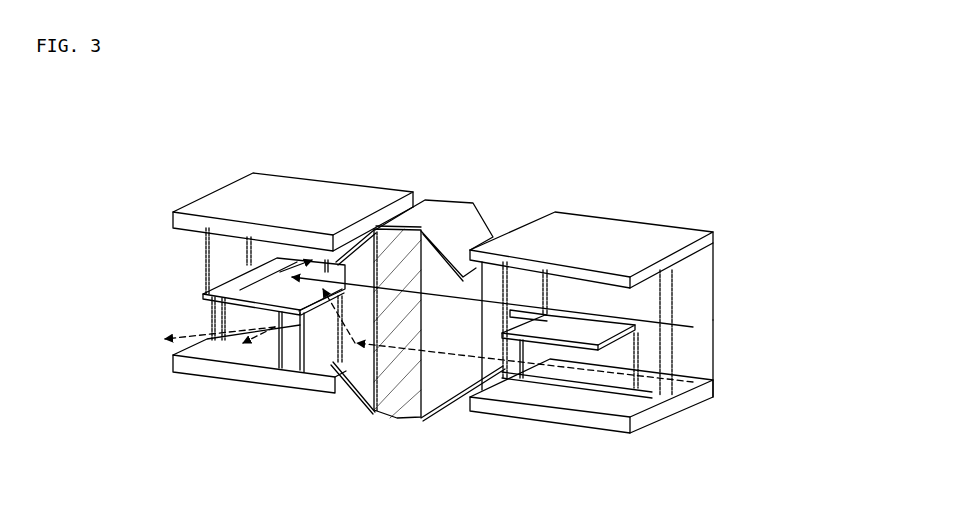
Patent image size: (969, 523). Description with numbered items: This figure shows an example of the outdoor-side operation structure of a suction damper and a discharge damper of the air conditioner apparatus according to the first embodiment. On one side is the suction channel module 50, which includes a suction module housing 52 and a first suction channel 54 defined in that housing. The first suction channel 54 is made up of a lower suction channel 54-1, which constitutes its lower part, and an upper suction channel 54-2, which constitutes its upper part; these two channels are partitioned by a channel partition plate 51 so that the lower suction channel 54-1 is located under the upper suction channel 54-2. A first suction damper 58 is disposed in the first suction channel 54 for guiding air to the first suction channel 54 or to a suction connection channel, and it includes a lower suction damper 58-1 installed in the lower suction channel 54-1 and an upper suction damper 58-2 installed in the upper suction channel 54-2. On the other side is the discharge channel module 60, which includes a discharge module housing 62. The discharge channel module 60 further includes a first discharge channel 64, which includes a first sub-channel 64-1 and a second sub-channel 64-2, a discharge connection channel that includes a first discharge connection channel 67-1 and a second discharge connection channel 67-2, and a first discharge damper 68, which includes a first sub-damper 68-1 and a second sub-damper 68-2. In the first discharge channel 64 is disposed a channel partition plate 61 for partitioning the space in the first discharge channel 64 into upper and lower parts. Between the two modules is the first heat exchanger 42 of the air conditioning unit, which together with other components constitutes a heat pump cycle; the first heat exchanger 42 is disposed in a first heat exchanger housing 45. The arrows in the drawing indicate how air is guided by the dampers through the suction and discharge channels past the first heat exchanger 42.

The first heat exchanger 42 is at (405, 242).
The first heat exchanger housing 45 is at (443, 205).
The suction channel module 50 is at (637, 213).
The channel partition plate 51 is at (600, 433).
The suction module housing 52 is at (582, 225).
The first suction channel 54 is at (580, 478).
The 1-1 suction channel 54-1 is at (595, 333).
The 1-2 suction channel 54-2 is at (574, 303).
The first suction damper 58 is at (775, 298).
The 1-1 suction damper 58-1 is at (623, 360).
The 1-2 suction damper 58-2 is at (641, 304).
The discharge channel module 60 is at (265, 165).
The channel partition plate 61 is at (237, 290).
The discharge module housing 62 is at (343, 203).
The first discharge channel 64 is at (272, 447).
The 1-1 discharge channel 64-1 is at (272, 340).
The 1-2 discharge channel 64-2 is at (272, 270).
The first discharge connection channel 67-1 is at (305, 372).
The second discharge connection channel 67-2 is at (318, 266).
The first discharge damper 68 is at (173, 118).
The 1-1 discharge damper 68-1 is at (300, 318).
The 1-2 discharge damper 68-2 is at (220, 255).